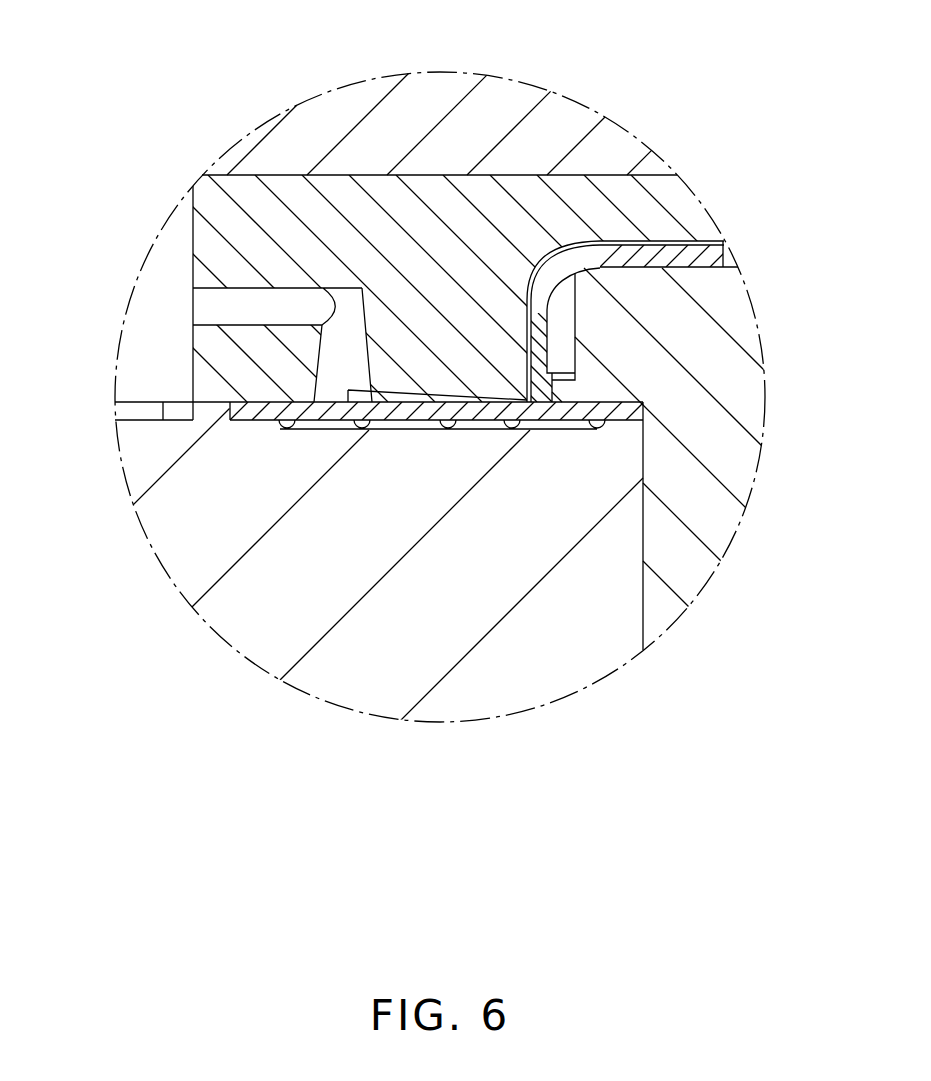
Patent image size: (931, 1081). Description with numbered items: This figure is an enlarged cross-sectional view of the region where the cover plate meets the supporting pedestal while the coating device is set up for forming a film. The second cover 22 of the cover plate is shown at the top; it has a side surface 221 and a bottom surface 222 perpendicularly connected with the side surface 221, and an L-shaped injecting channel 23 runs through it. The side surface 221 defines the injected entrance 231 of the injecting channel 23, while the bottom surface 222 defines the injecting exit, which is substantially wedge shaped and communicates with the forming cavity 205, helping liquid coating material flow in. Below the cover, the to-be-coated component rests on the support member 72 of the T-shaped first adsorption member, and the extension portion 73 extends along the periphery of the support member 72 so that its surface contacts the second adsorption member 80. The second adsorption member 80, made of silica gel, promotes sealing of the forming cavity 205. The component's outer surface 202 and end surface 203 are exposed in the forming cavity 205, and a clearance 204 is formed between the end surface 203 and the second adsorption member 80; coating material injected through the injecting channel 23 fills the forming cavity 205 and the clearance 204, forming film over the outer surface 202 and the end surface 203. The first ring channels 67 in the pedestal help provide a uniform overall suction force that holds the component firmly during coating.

The second cover 22 is at (402, 202).
The injecting channel 23 is at (257, 303).
The injected entrance 231 is at (192, 306).
The side surface 221 is at (192, 243).
The outer surface 202 is at (657, 238).
The forming cavity 205 is at (715, 240).
The clearance 204 is at (529, 402).
The end surface 203 is at (540, 430).
The extension portion 73 is at (576, 378).
The support member 72 is at (718, 338).
The bottom surface 222 is at (363, 425).
The second adsorption member 80 is at (232, 421).
The first ring channels 67 is at (362, 425).